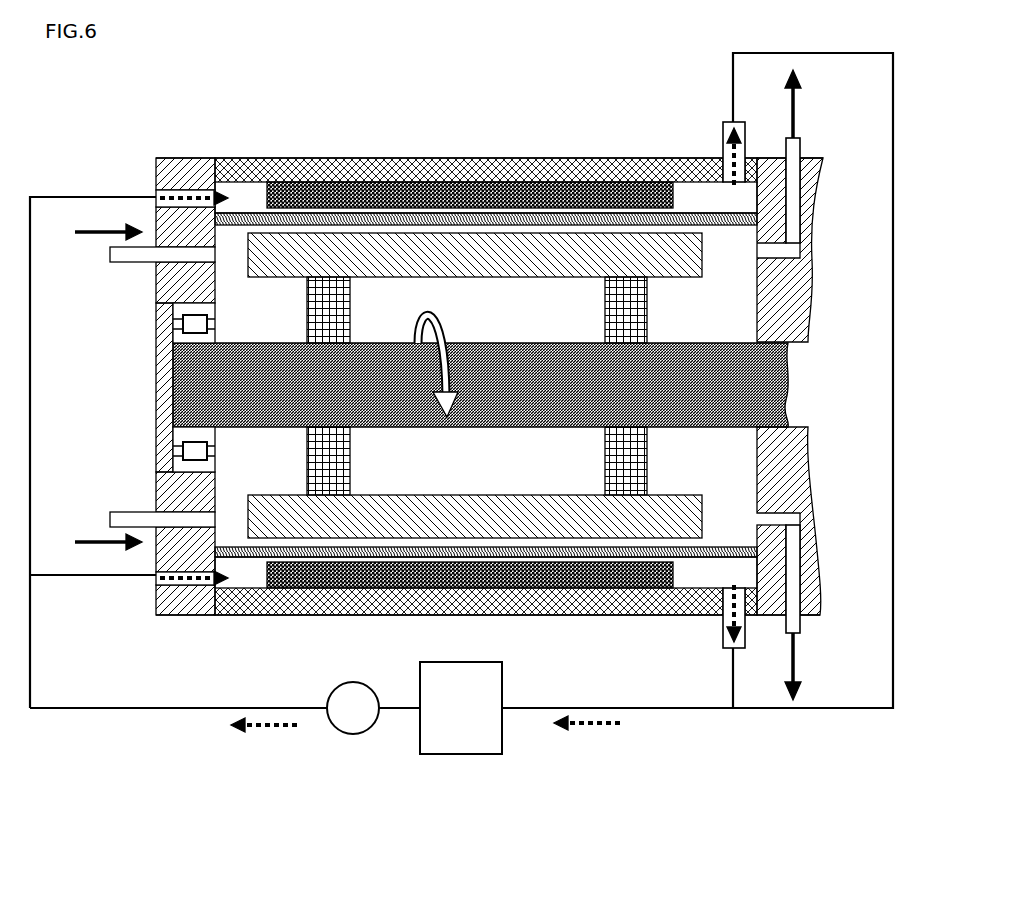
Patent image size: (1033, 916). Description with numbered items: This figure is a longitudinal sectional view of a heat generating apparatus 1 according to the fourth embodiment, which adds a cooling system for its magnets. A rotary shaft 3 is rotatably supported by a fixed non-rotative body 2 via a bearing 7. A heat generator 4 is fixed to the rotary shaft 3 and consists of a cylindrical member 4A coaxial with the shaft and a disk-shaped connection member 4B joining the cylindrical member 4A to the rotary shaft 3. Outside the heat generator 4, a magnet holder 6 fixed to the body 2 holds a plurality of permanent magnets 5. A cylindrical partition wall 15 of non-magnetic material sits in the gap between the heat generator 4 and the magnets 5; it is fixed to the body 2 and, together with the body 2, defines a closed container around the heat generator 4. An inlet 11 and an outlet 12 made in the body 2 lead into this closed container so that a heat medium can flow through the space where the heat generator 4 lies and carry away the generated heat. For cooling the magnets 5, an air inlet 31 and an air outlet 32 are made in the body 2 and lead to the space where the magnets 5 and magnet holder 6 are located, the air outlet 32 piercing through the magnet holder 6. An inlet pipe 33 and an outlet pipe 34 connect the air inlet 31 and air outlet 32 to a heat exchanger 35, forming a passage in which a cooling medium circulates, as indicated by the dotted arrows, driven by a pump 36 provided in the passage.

The heat generating apparatus 1 is at (203, 140).
The body 2 is at (160, 158).
The rotary shaft 3 is at (175, 370).
The heat generator 4 is at (387, 385).
The cylindrical member 4A is at (248, 266).
The connection member 4B is at (307, 300).
The permanent magnets 5 is at (315, 157).
The magnet holder 6 is at (470, 157).
The bearing 7 is at (175, 432).
The inlet 11 is at (110, 255).
The outlet 12 is at (801, 136).
The partition wall 15 is at (697, 557).
The air inlet 31 is at (156, 192).
The air outlet 32 is at (746, 122).
The inlet pipe 33 is at (68, 196).
The outlet pipe 34 is at (876, 53).
The heat exchanger 35 is at (505, 733).
The pump 36 is at (365, 733).